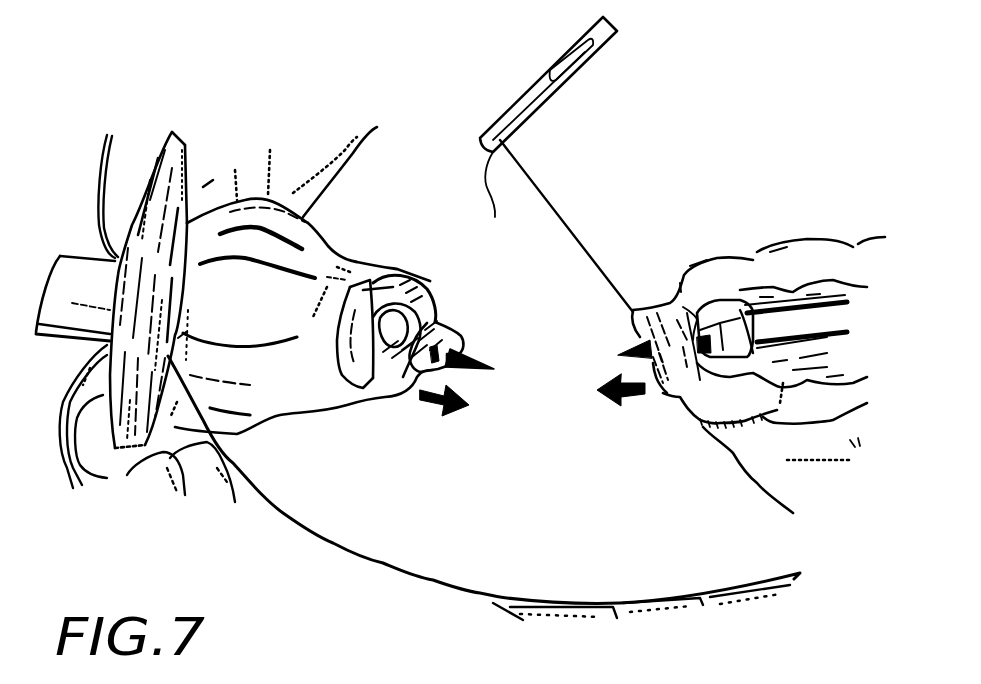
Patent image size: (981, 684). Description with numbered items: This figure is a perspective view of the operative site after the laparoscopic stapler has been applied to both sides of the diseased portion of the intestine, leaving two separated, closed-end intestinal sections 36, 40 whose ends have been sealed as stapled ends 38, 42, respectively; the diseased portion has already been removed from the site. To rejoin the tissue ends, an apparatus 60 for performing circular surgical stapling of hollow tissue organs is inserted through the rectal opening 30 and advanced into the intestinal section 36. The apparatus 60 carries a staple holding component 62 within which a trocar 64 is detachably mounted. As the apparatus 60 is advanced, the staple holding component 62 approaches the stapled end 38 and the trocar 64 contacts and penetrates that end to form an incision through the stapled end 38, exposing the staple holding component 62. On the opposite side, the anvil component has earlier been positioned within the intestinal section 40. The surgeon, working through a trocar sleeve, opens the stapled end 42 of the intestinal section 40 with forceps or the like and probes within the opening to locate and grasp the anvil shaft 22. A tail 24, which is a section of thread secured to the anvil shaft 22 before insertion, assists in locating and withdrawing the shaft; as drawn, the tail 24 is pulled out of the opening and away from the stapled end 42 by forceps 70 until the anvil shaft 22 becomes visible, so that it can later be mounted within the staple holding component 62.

The anvil shaft 22 is at (737, 325).
The tail 24 is at (583, 227).
The rectal opening 30 is at (137, 227).
The intestinal section 36 is at (305, 373).
The stapled end 38 is at (443, 325).
The intestinal section 40 is at (830, 238).
The stapled end 42 is at (663, 392).
The apparatus for performing circular surgical stapling 60 is at (73, 273).
The staple holding component 62 is at (364, 300).
The trocar 64 is at (488, 372).
The forceps 70 is at (603, 42).